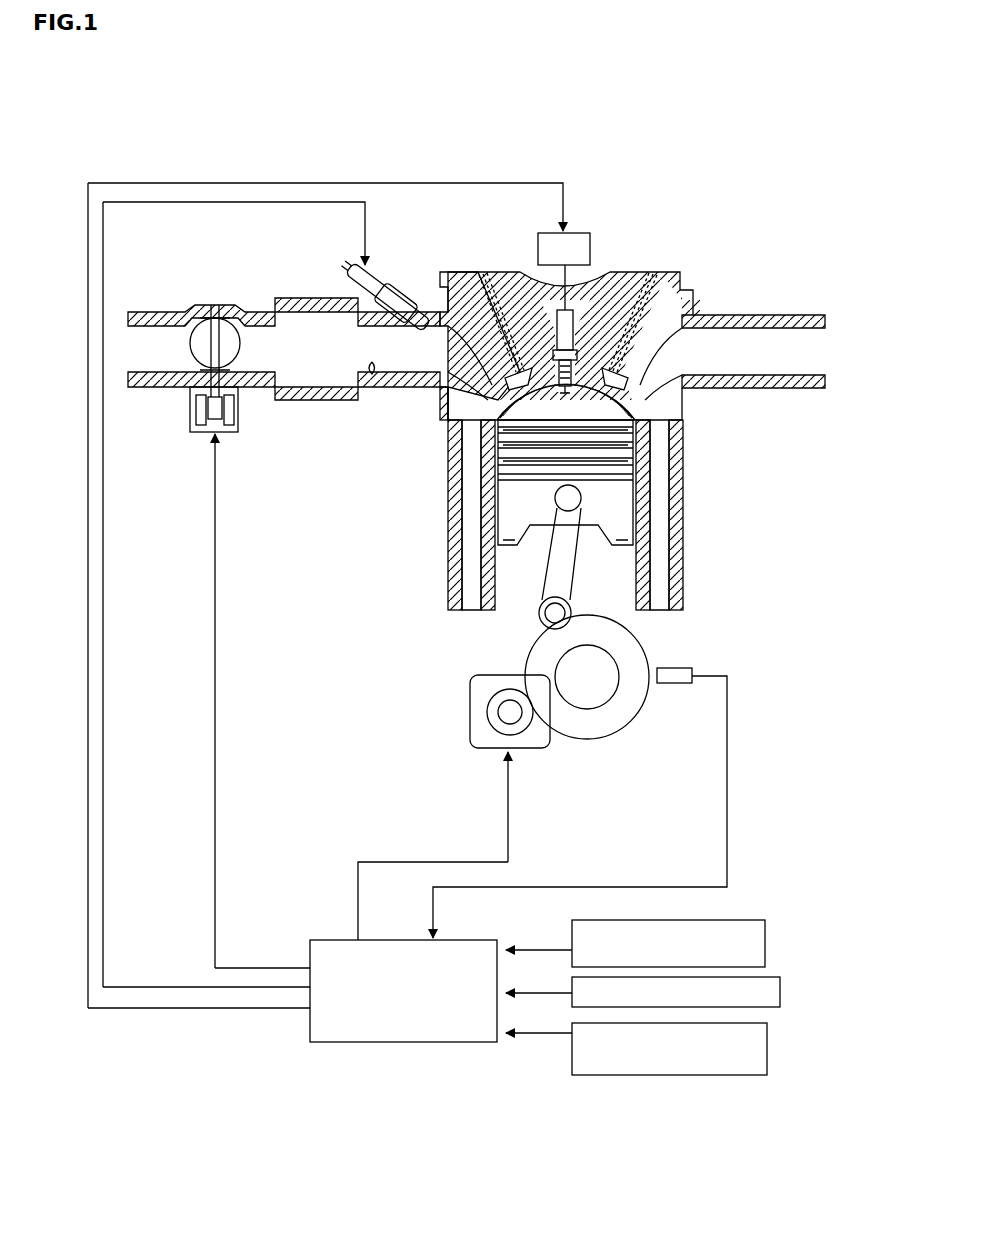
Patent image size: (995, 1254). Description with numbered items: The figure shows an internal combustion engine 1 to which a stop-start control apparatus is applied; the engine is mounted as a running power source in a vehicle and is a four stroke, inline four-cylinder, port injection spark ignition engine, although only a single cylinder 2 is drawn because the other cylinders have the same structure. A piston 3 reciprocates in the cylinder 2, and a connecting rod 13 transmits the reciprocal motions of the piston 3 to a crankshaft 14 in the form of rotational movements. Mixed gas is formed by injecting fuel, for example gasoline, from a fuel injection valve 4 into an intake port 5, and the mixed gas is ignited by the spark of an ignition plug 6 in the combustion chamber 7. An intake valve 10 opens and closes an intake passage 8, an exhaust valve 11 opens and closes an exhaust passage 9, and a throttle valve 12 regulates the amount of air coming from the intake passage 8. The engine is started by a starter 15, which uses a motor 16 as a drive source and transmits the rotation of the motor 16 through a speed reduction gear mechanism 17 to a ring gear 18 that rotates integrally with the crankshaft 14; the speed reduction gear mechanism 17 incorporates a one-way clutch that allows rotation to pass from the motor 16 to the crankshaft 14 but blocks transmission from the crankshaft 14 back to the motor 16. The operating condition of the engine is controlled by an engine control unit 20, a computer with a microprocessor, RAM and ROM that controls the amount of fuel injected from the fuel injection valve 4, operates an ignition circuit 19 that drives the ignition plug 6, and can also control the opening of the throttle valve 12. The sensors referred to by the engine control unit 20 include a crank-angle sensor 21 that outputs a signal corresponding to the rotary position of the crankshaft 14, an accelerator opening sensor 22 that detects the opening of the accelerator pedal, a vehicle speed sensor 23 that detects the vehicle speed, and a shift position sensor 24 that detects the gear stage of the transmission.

The internal combustion engine 1 is at (670, 228).
The cylinder 2 is at (630, 495).
The piston 3 is at (618, 528).
The fuel injection valve 4 is at (395, 290).
The intake port 5 is at (432, 403).
The ignition plug 6 is at (573, 330).
The combustion chamber 7 is at (607, 405).
The intake passage 8 is at (373, 366).
The exhaust passage 9 is at (752, 332).
The intake valve 10 is at (505, 365).
The exhaust valve 11 is at (640, 355).
The throttle valve 12 is at (230, 333).
The connecting rod 13 is at (557, 578).
The crankshaft 14 is at (573, 663).
The starter 15 is at (458, 710).
The motor 16 is at (483, 736).
The speed reduction gear mechanism 17 is at (497, 698).
The ring gear 18 is at (585, 740).
The ignition circuit 19 is at (588, 245).
The engine control unit 20 is at (325, 950).
The crank-angle sensor 21 is at (682, 666).
The accelerator opening sensor 22 is at (770, 955).
The vehicle speed sensor 23 is at (785, 993).
The shift position sensor 24 is at (770, 1050).